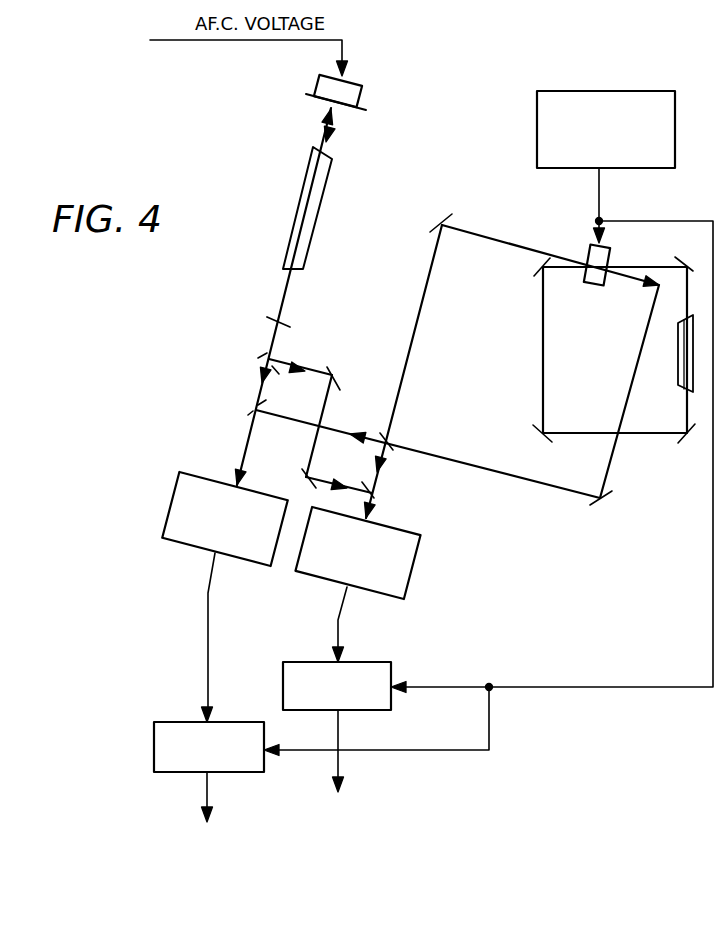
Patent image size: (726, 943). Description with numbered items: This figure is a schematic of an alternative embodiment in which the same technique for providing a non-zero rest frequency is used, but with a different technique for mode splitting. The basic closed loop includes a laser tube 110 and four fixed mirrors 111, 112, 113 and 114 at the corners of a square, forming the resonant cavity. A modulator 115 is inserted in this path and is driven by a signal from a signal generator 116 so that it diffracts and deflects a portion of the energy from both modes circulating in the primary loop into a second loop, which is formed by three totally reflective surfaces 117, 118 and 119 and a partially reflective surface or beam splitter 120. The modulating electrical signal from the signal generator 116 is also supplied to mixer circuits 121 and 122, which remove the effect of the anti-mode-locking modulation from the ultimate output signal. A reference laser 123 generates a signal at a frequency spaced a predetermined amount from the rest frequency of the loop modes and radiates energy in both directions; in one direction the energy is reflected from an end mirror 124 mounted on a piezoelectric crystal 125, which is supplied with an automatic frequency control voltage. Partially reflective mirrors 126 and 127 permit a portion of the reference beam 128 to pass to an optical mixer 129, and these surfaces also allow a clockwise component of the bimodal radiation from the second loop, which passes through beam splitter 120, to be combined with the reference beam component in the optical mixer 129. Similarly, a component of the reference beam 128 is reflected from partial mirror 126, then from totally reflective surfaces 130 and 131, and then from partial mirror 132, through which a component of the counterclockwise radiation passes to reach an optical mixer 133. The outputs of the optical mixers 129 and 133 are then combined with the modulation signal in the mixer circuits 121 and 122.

The laser tube 110 is at (677, 367).
The fixed mirror 111 is at (685, 442).
The fixed mirror 112 is at (540, 433).
The fixed mirror 113 is at (540, 265).
The fixed mirror 114 is at (688, 263).
The modulator 115 is at (590, 258).
The signal generator 116 is at (541, 104).
The totally reflective surface 117 is at (653, 297).
The totally reflective surface 118 is at (598, 506).
The totally reflective surface 119 is at (435, 223).
The beam splitter 120 is at (388, 446).
The mixer circuit 121 is at (165, 733).
The mixer circuit 122 is at (389, 672).
The reference laser 123 is at (301, 175).
The end mirror 124 is at (349, 110).
The piezoelectric crystal 125 is at (366, 88).
The partially reflective mirror 126 is at (262, 354).
The partially reflective mirror 127 is at (250, 412).
The reference beam 128 is at (282, 296).
The optical mixer 129 is at (178, 518).
The totally reflective surface 130 is at (330, 369).
The totally reflective surface 131 is at (303, 471).
The partial mirror 132 is at (378, 503).
The optical mixer 133 is at (418, 560).